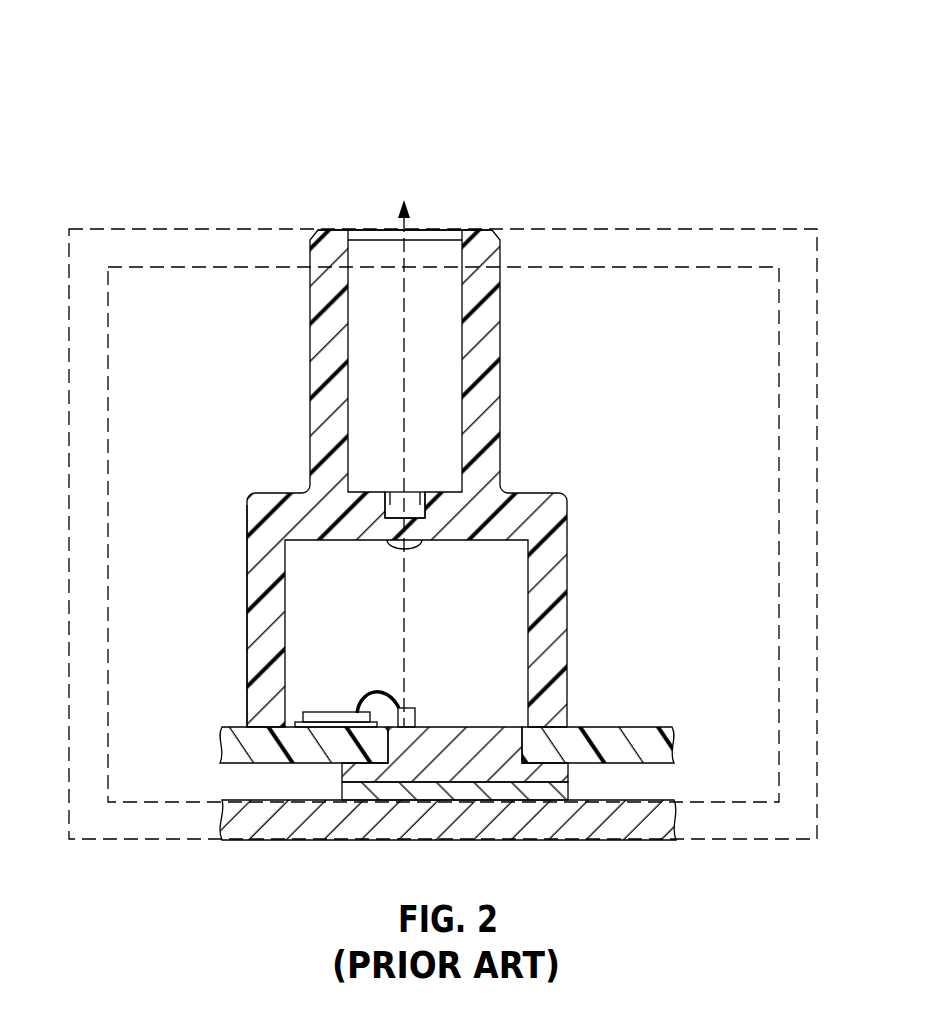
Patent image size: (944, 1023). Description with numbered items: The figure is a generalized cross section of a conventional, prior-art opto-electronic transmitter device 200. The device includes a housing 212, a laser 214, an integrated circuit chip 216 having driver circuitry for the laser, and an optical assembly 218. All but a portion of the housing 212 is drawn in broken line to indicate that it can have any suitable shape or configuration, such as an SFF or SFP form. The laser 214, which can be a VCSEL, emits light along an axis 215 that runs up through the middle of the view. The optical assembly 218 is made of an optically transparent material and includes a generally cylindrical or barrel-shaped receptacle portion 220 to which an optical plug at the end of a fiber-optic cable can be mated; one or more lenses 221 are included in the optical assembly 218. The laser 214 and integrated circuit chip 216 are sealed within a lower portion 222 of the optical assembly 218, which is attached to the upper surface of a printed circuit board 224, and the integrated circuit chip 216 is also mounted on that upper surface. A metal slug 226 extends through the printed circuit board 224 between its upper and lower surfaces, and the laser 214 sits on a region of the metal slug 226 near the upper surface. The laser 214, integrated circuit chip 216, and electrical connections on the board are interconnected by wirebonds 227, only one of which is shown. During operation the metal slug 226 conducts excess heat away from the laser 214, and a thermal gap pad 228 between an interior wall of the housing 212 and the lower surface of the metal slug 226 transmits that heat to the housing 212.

The opto-electronic transmitter device 200 is at (653, 94).
The housing 212 is at (270, 842).
The laser 214 is at (420, 707).
The axis 215 is at (406, 372).
The integrated circuit chip 216 is at (318, 712).
The optical assembly 218 is at (600, 548).
The receptacle portion 220 is at (433, 230).
The lens 221 is at (413, 545).
The lower portion 222 is at (247, 588).
The printed circuit board 224 is at (599, 727).
The metal slug 226 is at (470, 727).
The wirebond 227 is at (378, 688).
The thermal gap pad 228 is at (572, 790).